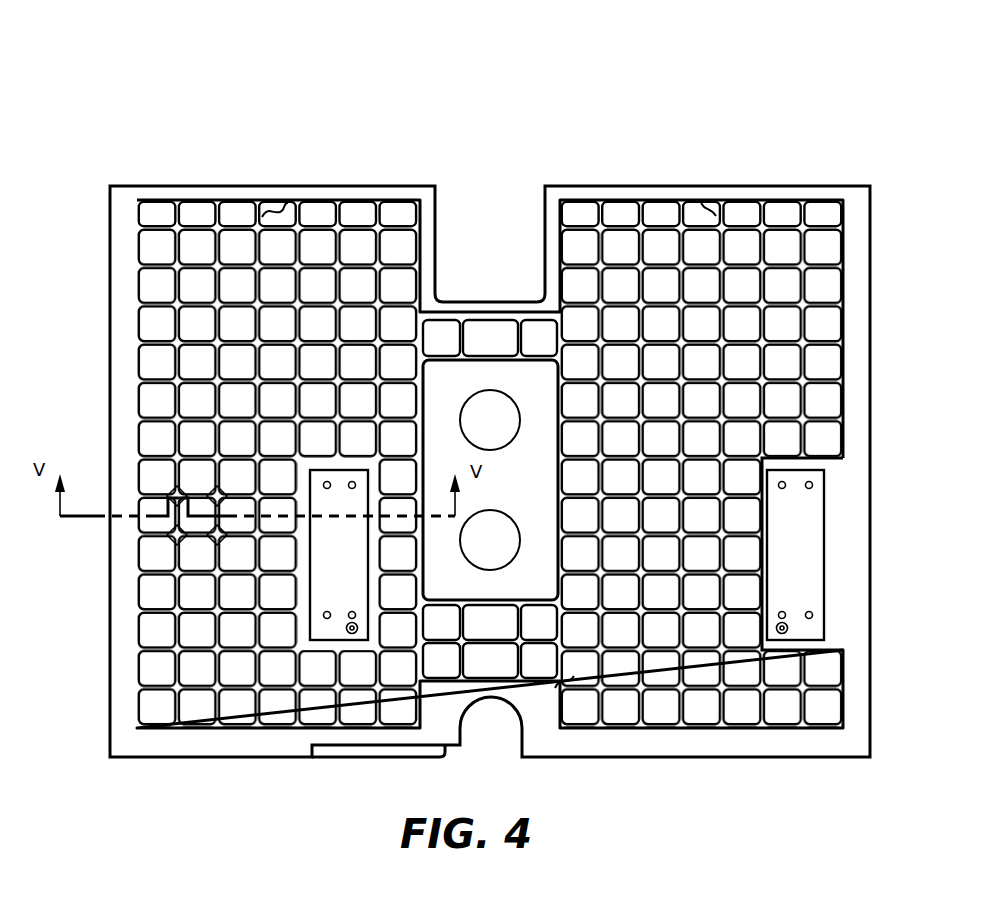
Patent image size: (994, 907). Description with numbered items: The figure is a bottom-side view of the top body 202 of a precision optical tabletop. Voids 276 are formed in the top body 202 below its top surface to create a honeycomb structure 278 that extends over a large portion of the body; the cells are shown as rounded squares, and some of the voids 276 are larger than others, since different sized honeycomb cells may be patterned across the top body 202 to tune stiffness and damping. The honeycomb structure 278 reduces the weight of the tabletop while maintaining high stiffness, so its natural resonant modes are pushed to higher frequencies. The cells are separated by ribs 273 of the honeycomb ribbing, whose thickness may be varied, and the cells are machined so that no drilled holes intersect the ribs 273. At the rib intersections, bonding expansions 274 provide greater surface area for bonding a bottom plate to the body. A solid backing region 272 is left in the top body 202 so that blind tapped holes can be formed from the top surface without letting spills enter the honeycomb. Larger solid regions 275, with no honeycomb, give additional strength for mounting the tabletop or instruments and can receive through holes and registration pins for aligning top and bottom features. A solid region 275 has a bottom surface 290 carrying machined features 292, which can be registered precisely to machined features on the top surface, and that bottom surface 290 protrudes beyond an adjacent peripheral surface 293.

The top body 202 is at (197, 100).
The solid backing region 272 is at (703, 210).
The ribs 273 is at (178, 325).
The bonding expansions 274 is at (380, 230).
The solid regions 275 is at (813, 508).
The voids 276 is at (238, 217).
The honeycomb structure 278 is at (703, 672).
The bottom surface 290 is at (525, 378).
The machined features 292 is at (783, 613).
The peripheral surface 293 is at (845, 622).